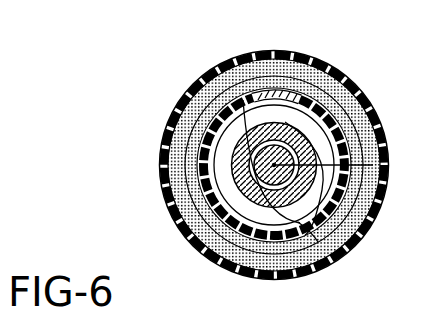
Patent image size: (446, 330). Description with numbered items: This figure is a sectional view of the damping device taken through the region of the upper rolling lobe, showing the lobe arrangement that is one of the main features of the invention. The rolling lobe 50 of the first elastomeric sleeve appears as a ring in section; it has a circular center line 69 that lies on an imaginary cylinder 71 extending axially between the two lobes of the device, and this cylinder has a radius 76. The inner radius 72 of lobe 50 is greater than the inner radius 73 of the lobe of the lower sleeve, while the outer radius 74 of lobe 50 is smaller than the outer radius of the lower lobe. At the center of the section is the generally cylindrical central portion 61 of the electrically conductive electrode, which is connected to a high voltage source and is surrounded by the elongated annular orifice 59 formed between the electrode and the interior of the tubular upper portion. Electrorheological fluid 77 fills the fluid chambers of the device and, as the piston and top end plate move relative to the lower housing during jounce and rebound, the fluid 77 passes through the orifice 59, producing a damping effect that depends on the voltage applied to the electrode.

The rolling lobe 50 is at (162, 176).
The elongated annular orifice 59 is at (250, 159).
The central portion 61 is at (262, 148).
The circular center line 69 is at (372, 229).
The imaginary cylinder 71 is at (170, 218).
The inner radius 72 is at (295, 122).
The inner radius 73 is at (274, 217).
The outer radius 74 is at (375, 199).
The radius 76 is at (300, 224).
The fluid 77 is at (192, 107).